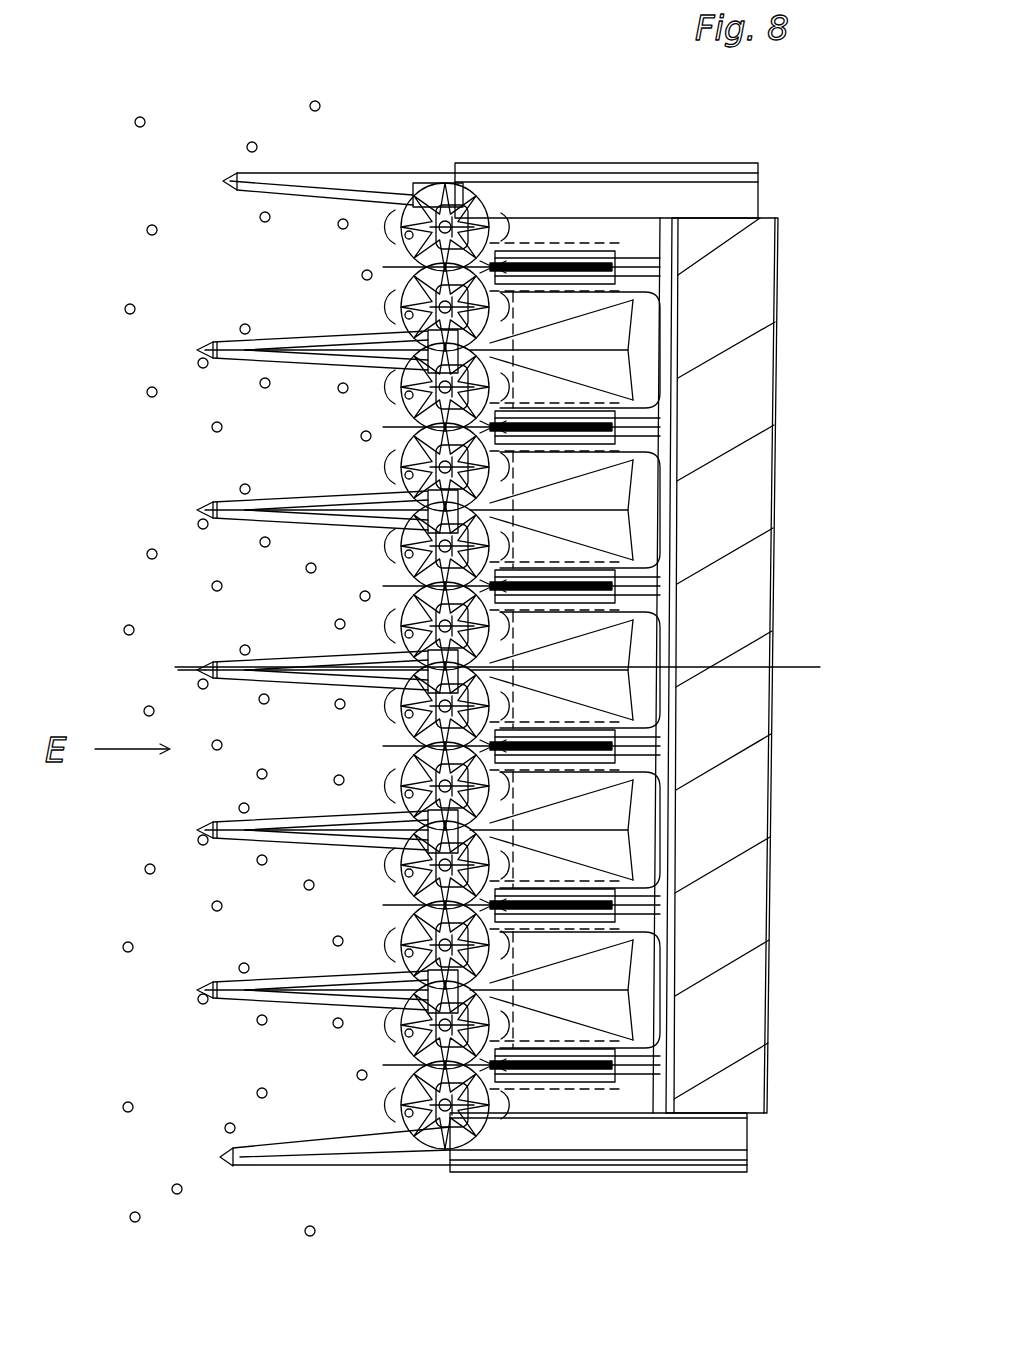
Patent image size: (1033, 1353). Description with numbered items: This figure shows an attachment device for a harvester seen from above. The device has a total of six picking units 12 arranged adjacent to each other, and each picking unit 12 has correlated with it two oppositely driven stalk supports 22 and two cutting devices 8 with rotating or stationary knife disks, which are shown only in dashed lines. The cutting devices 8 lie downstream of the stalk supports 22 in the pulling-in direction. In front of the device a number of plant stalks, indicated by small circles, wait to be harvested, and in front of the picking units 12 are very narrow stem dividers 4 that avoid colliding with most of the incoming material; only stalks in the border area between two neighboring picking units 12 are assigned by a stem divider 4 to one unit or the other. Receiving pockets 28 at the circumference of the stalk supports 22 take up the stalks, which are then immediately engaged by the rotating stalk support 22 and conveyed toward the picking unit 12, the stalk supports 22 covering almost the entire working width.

The stem divider 4 is at (250, 992).
The cutting device 8 is at (502, 1130).
The picking unit 12 is at (537, 1070).
The stalk support 22 is at (447, 1057).
The receiving pocket 28 is at (410, 640).